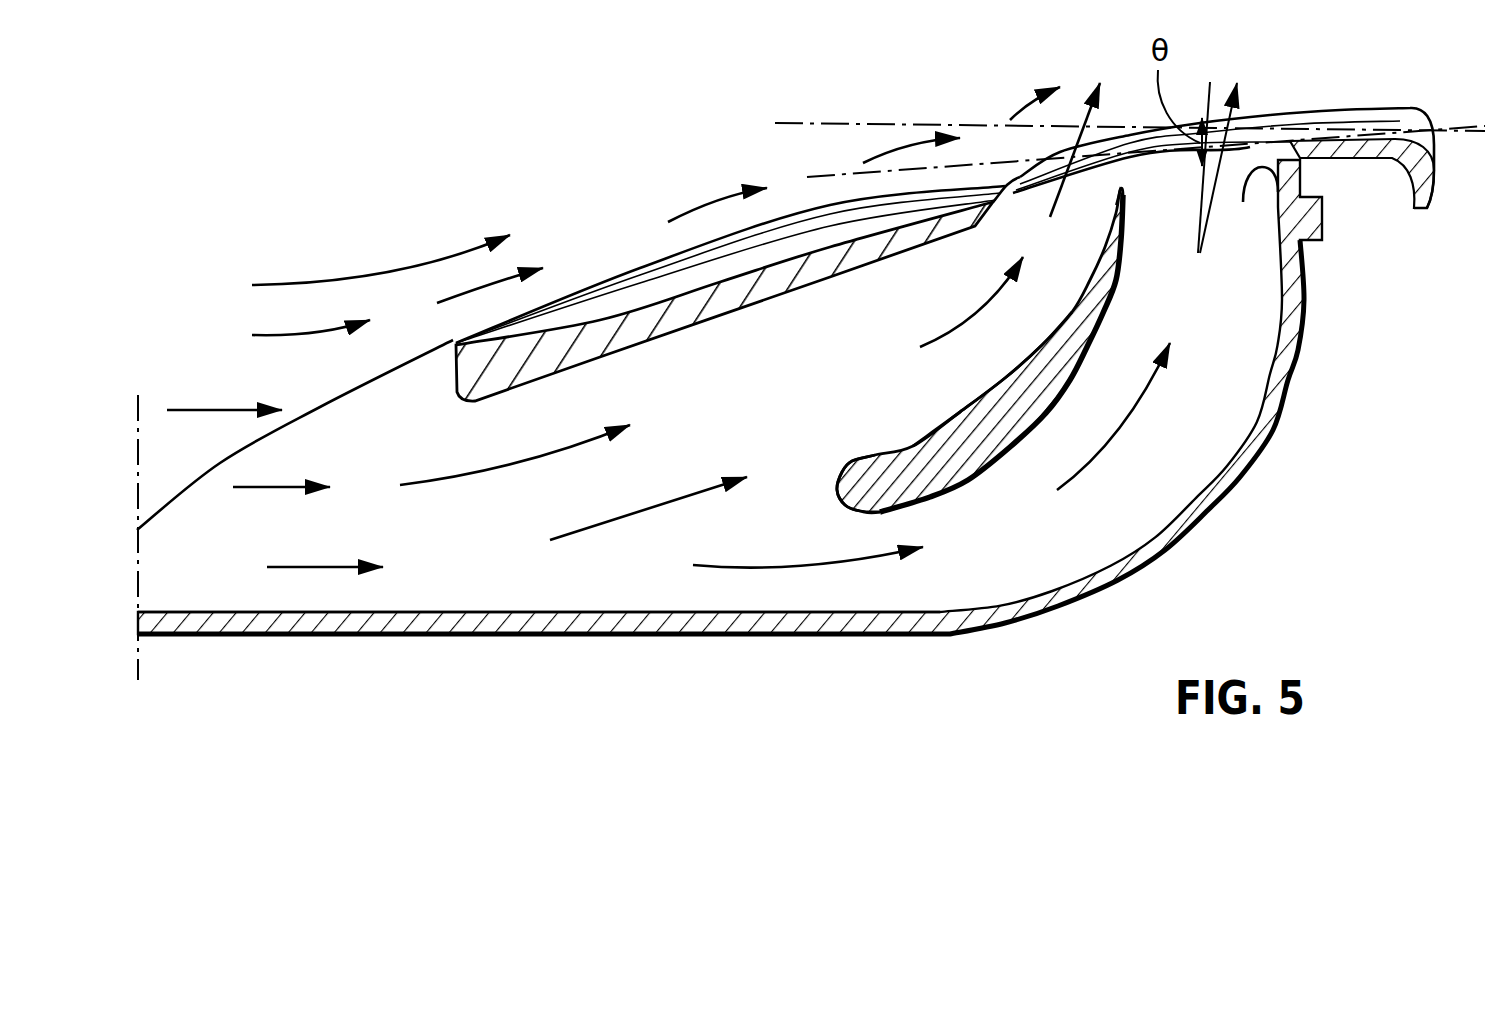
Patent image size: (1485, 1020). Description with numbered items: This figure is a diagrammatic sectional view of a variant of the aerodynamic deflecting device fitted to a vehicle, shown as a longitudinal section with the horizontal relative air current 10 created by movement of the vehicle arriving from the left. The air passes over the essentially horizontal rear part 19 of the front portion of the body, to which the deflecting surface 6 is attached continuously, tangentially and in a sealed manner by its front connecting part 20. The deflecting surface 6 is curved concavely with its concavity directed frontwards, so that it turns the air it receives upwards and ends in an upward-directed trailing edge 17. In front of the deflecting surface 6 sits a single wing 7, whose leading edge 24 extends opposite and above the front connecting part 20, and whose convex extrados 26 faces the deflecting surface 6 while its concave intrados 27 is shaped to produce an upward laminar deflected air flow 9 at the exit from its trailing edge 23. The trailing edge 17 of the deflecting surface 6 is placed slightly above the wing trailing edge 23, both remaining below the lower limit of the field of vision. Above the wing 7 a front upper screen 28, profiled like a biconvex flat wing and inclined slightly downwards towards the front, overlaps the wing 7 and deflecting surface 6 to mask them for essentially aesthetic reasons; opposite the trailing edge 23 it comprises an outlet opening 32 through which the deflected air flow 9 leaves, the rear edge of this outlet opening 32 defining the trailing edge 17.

The deflecting surface 6 is at (1273, 326).
The wing 7 is at (1105, 272).
The deflected air flow 9 is at (1066, 61).
The relative air current 10 is at (164, 376).
The trailing edge of the deflecting surface 17 is at (1268, 168).
The rear part of the front portion of the body 19 is at (296, 634).
The front connecting part 20 is at (1017, 619).
The trailing edge of the wing 23 is at (1121, 200).
The leading edge of the wing 24 is at (836, 492).
The convex extrados 26 is at (1113, 409).
The concave intrados 27 is at (1010, 382).
The front upper screen 28 is at (700, 315).
The outlet opening 32 is at (1097, 173).